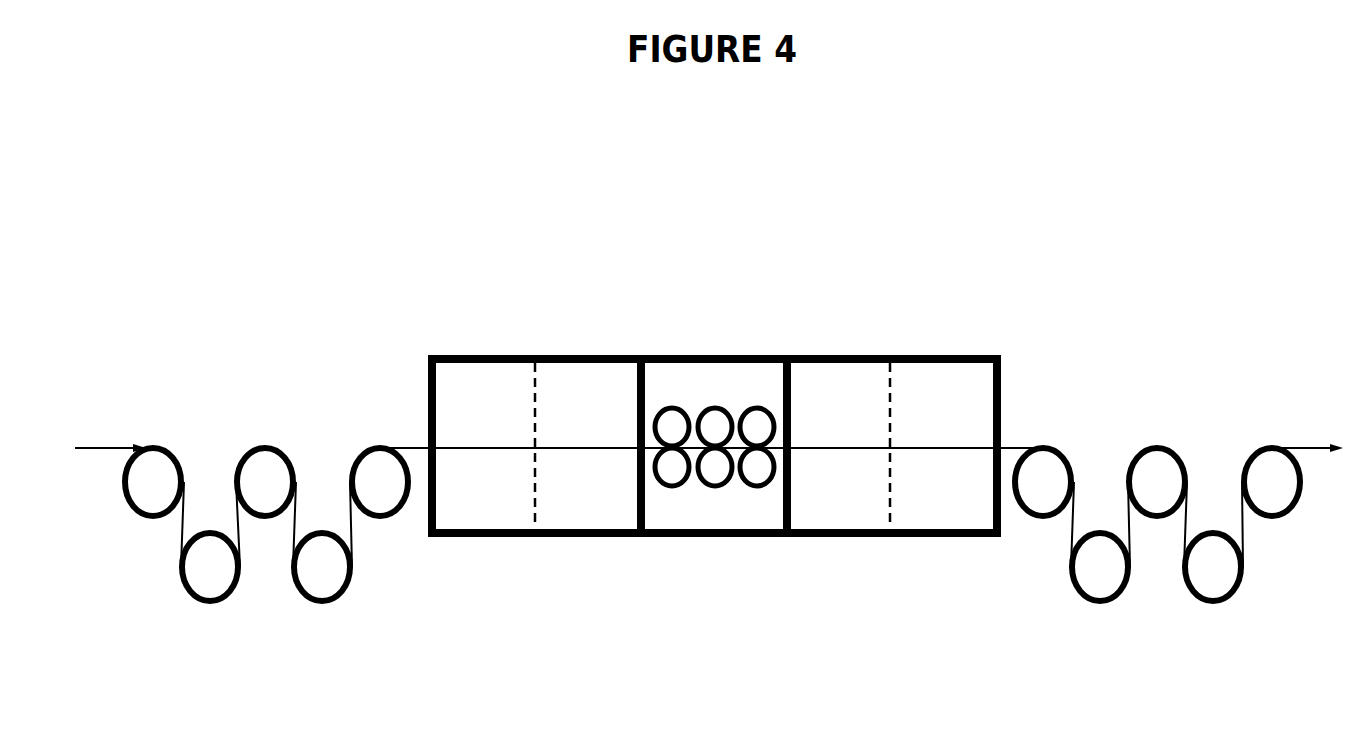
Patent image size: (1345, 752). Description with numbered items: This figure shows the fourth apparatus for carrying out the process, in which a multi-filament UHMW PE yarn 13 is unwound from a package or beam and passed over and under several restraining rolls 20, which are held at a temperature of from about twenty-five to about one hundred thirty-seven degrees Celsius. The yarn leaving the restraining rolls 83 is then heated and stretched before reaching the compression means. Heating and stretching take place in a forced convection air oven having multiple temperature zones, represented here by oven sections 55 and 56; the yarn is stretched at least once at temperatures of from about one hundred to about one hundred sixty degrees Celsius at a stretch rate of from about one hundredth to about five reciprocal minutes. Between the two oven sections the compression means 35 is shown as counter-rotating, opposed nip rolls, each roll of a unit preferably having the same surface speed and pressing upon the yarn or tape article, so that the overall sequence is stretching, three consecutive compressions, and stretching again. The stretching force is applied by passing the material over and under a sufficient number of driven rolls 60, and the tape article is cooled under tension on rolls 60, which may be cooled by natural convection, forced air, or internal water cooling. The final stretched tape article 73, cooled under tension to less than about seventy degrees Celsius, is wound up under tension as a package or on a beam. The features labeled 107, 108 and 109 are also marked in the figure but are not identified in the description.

The multi-filament UHMW PE yarn 13 is at (102, 447).
The restraining rolls 20 is at (170, 447).
The yarn leaving the restraining rolls 83 is at (407, 442).
The forced convection air oven 55 is at (480, 352).
The forced convection air oven 56 is at (840, 354).
The first nip 107 is at (692, 447).
The second nip 108 is at (735, 447).
The web in second chamber 109 is at (947, 445).
The compression means 35 is at (752, 487).
The driven rolls 60 is at (1260, 447).
The final stretched tape article 73 is at (1312, 445).